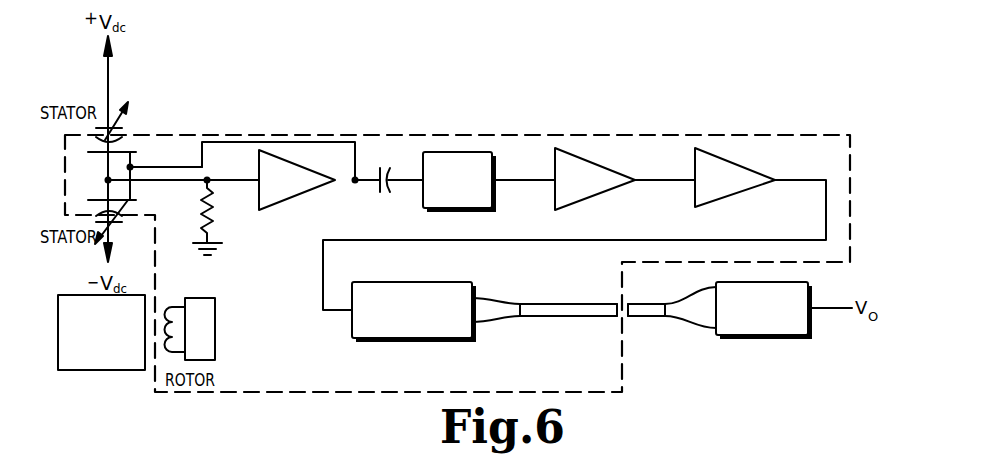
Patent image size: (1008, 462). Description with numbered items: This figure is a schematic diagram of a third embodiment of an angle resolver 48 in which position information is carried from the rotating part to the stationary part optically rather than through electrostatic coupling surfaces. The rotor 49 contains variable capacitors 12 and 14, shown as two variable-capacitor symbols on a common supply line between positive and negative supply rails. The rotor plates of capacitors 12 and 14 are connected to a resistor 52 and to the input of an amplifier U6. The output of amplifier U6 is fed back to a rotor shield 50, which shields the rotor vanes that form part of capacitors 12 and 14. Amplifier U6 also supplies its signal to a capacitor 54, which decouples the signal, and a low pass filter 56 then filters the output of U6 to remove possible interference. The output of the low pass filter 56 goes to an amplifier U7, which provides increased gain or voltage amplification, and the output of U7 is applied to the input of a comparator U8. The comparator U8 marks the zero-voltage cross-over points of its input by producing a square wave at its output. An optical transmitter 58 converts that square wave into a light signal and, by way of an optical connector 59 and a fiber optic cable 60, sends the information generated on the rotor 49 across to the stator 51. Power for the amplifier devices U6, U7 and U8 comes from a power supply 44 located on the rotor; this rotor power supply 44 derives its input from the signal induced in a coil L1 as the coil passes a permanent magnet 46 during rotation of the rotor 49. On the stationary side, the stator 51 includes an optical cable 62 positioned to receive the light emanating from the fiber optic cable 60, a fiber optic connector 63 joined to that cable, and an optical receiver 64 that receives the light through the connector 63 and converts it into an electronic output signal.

The variable capacitor 12 is at (122, 133).
The variable capacitor 14 is at (112, 220).
The power supply 44 is at (215, 322).
The permanent magnet 46 is at (123, 370).
The angle resolver 48 is at (685, 90).
The rotor 49 is at (712, 135).
The rotor shield 50 is at (136, 151).
The stator 51 is at (690, 372).
The resistor 52 is at (214, 220).
The capacitor 54 is at (389, 176).
The low pass filter 56 is at (493, 155).
The optical transmitter 58 is at (475, 283).
The optical connector 59 is at (500, 319).
The fiber optic cable 60 is at (572, 317).
The optical cable 62 is at (645, 317).
The fiber optic connector 63 is at (683, 318).
The optical receiver 64 is at (810, 283).
The amplifier U6 is at (303, 194).
The amplifier U7 is at (607, 168).
The comparator U8 is at (750, 165).
The coil L1 is at (178, 306).